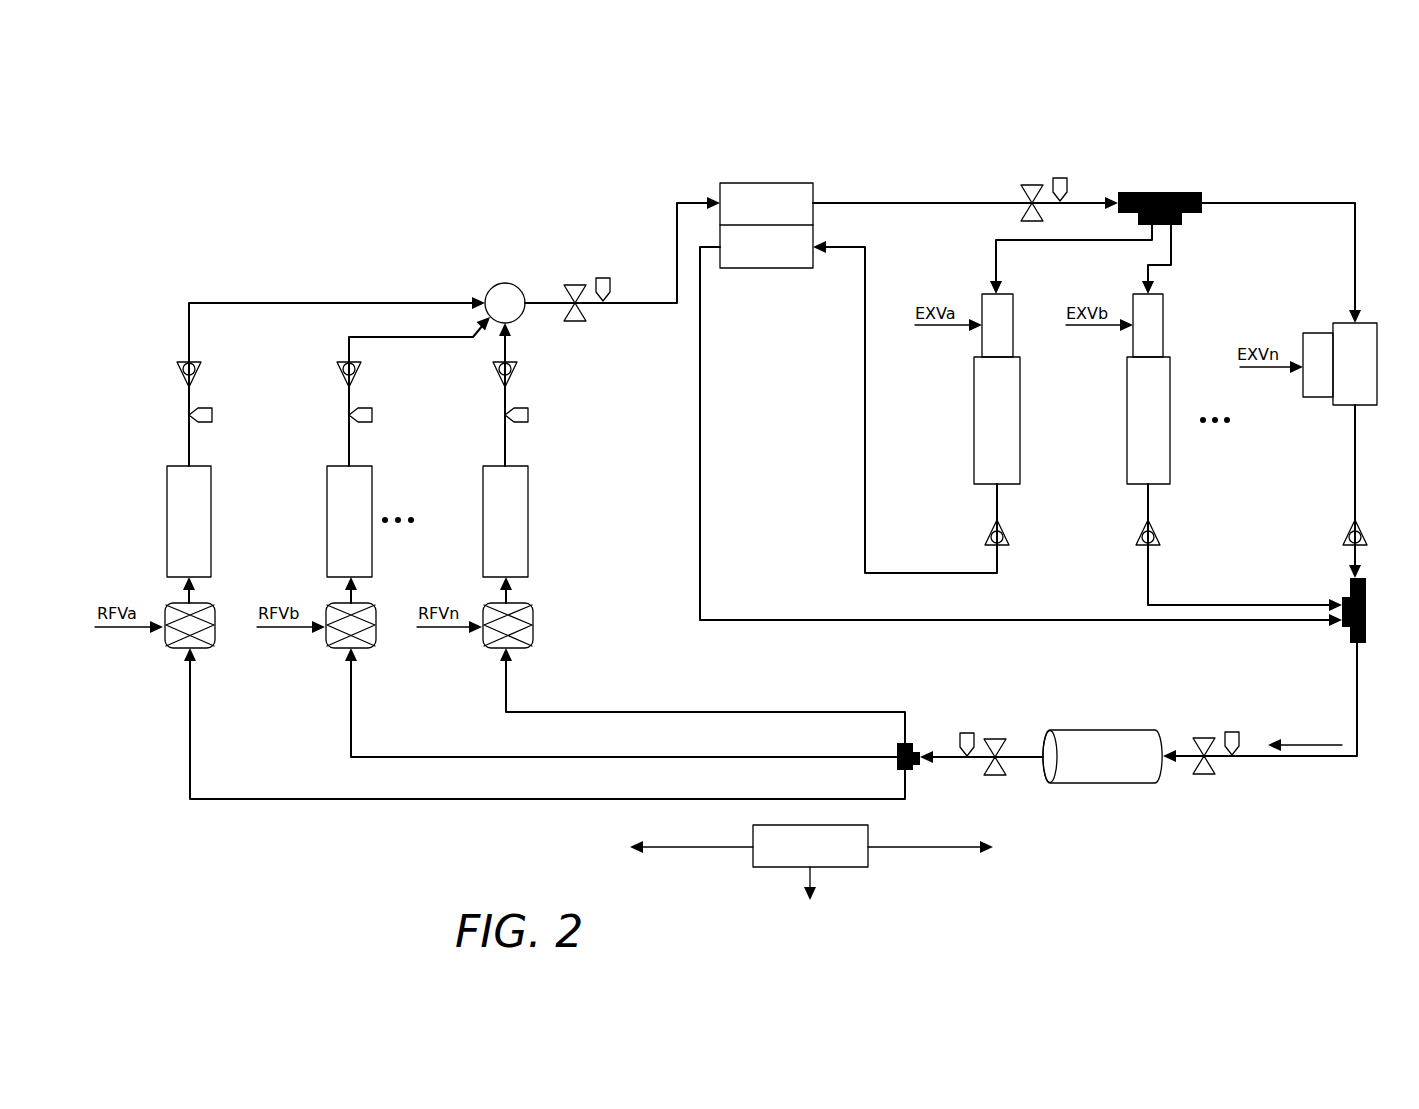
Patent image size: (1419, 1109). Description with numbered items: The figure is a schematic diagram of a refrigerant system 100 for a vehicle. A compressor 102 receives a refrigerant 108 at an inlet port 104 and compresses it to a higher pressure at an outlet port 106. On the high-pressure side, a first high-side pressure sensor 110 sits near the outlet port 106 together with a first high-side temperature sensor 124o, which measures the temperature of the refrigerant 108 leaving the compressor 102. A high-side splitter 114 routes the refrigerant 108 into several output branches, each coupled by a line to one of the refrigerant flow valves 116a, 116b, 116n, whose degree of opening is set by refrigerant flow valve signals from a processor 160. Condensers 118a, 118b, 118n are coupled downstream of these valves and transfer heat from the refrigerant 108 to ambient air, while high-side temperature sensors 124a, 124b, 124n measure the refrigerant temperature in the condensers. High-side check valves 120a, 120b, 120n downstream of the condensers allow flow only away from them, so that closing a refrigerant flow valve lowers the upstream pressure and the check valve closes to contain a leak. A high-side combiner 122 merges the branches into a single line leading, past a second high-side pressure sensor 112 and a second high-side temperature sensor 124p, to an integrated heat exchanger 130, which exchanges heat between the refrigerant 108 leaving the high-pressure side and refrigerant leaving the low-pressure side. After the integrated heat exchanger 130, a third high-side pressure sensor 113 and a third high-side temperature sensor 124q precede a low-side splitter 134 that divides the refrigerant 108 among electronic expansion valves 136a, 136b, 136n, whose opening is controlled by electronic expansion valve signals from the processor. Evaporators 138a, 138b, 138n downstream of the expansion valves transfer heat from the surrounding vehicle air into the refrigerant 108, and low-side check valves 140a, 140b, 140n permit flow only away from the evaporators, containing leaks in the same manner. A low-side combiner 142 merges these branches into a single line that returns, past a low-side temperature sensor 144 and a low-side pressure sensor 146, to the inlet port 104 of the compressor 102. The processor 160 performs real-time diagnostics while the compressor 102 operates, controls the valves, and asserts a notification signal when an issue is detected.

The refrigerant system 100 is at (323, 210).
The compressor 102 is at (1100, 730).
The inlet port 104 is at (1160, 780).
The outlet port 106 is at (1048, 775).
The refrigerant 108 is at (1333, 739).
The first high-side pressure sensor 110 is at (993, 740).
The second high-side pressure sensor 112 is at (573, 285).
The third high-side pressure sensor 113 is at (1030, 185).
The high-side splitter 114 is at (897, 750).
The refrigerant flow valve 116a is at (165, 640).
The refrigerant flow valve 116b is at (326, 640).
The refrigerant flow valve 116n is at (483, 640).
The condenser 118a is at (167, 505).
The condenser 118b is at (327, 505).
The condenser 118n is at (483, 505).
The high-side check valve 120a is at (180, 378).
The high-side check valve 120b is at (340, 378).
The high-side check valve 120n is at (497, 378).
The high-side combiner 122 is at (502, 283).
The high-side temperature sensor 124a is at (205, 408).
The high-side temperature sensor 124b is at (366, 408).
The high-side temperature sensor 124n is at (522, 408).
The first high-side temperature sensor 124o is at (966, 733).
The second high-side temperature sensor 124p is at (603, 278).
The third high-side temperature sensor 124q is at (1060, 178).
The integrated heat exchanger 130 is at (762, 183).
The low-side splitter 134 is at (1162, 192).
The electronic expansion valve 136a is at (982, 338).
The electronic expansion valve 136b is at (1133, 338).
The electronic expansion valve 136n is at (1322, 333).
The evaporator 138a is at (974, 405).
The evaporator 138b is at (1127, 405).
The evaporator 138n is at (1362, 323).
The low-side check valve 140a is at (990, 525).
The low-side check valve 140b is at (1140, 525).
The low-side check valve 140n is at (1348, 525).
The low-side combiner 142 is at (1345, 585).
The low-side temperature sensor 144 is at (1232, 733).
The low-side pressure sensor 146 is at (1202, 738).
The processor 160 is at (753, 860).